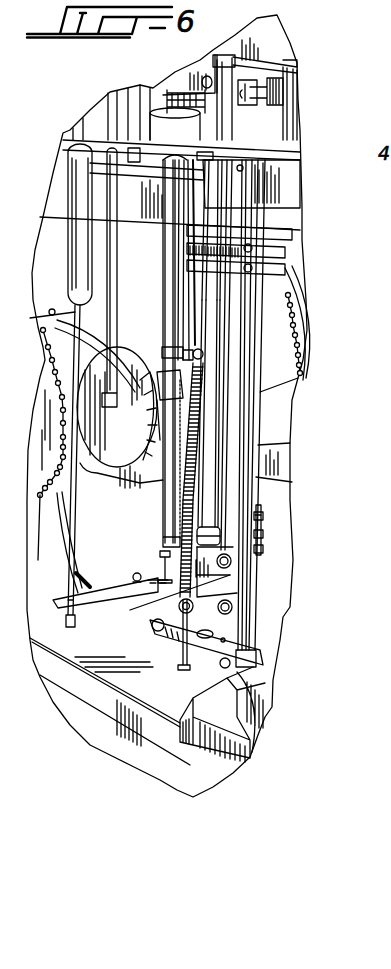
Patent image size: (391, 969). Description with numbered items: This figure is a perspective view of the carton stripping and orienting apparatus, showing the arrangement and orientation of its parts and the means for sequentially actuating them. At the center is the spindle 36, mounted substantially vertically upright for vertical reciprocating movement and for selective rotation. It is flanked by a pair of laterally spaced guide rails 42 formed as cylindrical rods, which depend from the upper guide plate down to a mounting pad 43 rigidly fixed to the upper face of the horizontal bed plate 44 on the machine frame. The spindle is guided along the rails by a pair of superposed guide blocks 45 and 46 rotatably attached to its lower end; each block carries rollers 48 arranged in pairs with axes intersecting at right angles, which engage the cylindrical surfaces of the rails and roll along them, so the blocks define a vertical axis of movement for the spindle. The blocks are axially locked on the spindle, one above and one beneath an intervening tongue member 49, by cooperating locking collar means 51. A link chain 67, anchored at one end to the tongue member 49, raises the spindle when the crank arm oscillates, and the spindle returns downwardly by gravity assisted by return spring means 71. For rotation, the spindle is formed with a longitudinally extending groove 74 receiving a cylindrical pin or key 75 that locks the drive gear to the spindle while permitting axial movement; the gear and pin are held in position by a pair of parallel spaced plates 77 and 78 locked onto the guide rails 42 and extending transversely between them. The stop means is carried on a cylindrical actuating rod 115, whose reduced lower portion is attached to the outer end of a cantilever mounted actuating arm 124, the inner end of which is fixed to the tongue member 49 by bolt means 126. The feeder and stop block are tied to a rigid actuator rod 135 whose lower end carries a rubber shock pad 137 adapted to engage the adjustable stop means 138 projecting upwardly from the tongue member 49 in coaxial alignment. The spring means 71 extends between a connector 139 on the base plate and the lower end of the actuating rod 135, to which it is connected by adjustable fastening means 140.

The spindle 36 is at (212, 512).
The guide rails 42 is at (302, 377).
The mounting pad 43 is at (177, 642).
The bed plate 44 is at (173, 705).
The upper guide block 45 is at (221, 536).
The lower guide block 46 is at (232, 595).
The rollers 48 is at (231, 562).
The tongue member 49 is at (258, 518).
The locking collar means 51 is at (77, 563).
The link chain 67 is at (262, 548).
The return spring means 71 is at (183, 507).
The longitudinally extending groove 74 is at (220, 290).
The cylindrical pin or key 75 is at (283, 258).
The plate 77 is at (283, 248).
The plate 78 is at (288, 268).
The actuating rod 115 is at (75, 574).
The actuating arm 124 is at (92, 601).
The bolt means 126 is at (138, 572).
The actuator rod 135 is at (173, 292).
The shock pad 137 is at (163, 390).
The adjustable stop means 138 is at (162, 553).
The connector 139 is at (182, 660).
The adjustable fastening means 140 is at (164, 347).